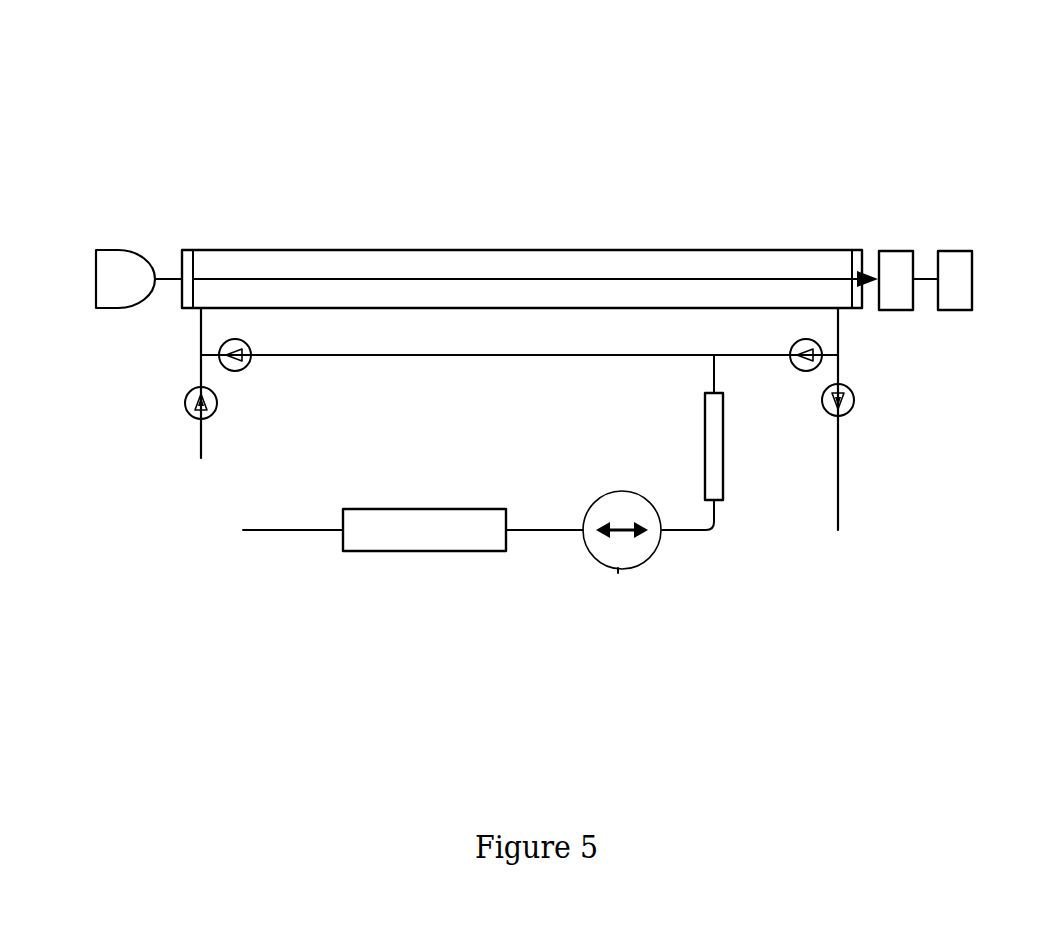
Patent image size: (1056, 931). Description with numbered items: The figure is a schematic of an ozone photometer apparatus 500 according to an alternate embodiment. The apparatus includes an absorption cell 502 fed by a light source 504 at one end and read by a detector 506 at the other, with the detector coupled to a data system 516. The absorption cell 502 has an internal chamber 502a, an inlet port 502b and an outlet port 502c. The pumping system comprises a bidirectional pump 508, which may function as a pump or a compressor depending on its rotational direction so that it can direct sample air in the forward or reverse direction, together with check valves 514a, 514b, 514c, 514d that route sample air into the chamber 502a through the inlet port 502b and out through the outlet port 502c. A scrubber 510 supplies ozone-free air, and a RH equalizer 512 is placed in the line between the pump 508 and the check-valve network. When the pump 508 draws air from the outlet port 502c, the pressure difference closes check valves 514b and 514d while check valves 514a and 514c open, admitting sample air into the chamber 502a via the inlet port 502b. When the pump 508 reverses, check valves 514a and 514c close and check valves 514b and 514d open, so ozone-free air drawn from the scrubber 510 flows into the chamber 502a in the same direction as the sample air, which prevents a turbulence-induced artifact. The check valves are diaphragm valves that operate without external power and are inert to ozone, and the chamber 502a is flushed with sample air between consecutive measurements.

The ozone photometer apparatus 500 is at (496, 88).
The absorption cell 502 is at (320, 250).
The chamber 502a is at (468, 265).
The inlet port 502b is at (201, 312).
The outlet port 502c is at (840, 312).
The light source 504 is at (100, 250).
The detector 506 is at (898, 250).
The bidirectional pump 508 is at (618, 570).
The scrubber 510 is at (413, 551).
The RH equalizer 512 is at (705, 463).
The check valve 514a is at (192, 415).
The check valve 514b is at (243, 370).
The check valve 514c is at (805, 372).
The check valve 514d is at (845, 415).
The data system 516 is at (953, 250).